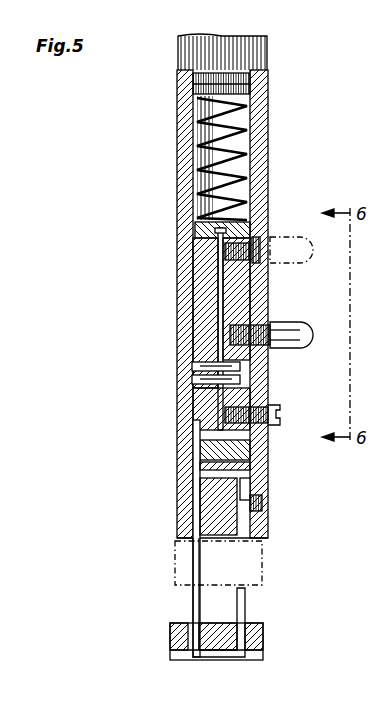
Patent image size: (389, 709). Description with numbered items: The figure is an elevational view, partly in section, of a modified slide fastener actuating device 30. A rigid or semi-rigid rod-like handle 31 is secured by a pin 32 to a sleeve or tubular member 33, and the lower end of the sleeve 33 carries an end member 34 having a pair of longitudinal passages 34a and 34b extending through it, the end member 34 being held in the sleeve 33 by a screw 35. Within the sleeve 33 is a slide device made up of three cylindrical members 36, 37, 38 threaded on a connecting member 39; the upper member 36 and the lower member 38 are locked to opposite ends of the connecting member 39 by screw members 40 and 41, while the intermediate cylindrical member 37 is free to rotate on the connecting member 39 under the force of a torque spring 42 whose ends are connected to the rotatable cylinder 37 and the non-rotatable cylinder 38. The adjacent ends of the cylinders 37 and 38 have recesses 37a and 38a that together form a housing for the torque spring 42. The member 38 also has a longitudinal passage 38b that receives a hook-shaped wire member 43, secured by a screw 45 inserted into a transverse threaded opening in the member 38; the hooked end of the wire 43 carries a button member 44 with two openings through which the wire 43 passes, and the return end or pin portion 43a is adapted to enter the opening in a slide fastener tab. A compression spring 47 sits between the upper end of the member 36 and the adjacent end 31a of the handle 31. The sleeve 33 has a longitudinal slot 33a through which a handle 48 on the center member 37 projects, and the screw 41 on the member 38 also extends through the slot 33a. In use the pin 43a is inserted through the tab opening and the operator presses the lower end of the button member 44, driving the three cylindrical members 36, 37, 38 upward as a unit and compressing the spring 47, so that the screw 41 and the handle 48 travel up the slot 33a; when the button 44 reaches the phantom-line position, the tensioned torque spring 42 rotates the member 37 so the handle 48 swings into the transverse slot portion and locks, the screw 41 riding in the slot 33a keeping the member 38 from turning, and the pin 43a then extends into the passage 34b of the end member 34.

The slide fastener actuating device 30 is at (152, 343).
The handle 31 is at (265, 47).
The adjacent end of handle 31a is at (258, 92).
The pin 32 is at (255, 84).
The sleeve or tubular member 33 is at (262, 131).
The longitudinal slot 33a is at (268, 366).
The end member 34 is at (205, 506).
The longitudinal passage 34a is at (180, 534).
The longitudinal passage 34b is at (243, 488).
The screw 35 is at (262, 503).
The cylindrical member 36 is at (218, 250).
The intermediate cylindrical member 37 is at (240, 290).
The recess 37a is at (195, 364).
The cylindrical member 38 is at (195, 412).
The recess 38a is at (193, 390).
The longitudinal passage 38b is at (198, 440).
The connecting member 39 is at (215, 305).
The screw member 40 is at (255, 232).
The screw member 41 is at (281, 410).
The torque spring 42 is at (195, 376).
The wire member 43 is at (196, 468).
The pin portion 43a is at (243, 602).
The button member 44 is at (265, 562).
The screw 45 is at (252, 452).
The compression spring 47 is at (250, 188).
The handle 48 is at (300, 332).